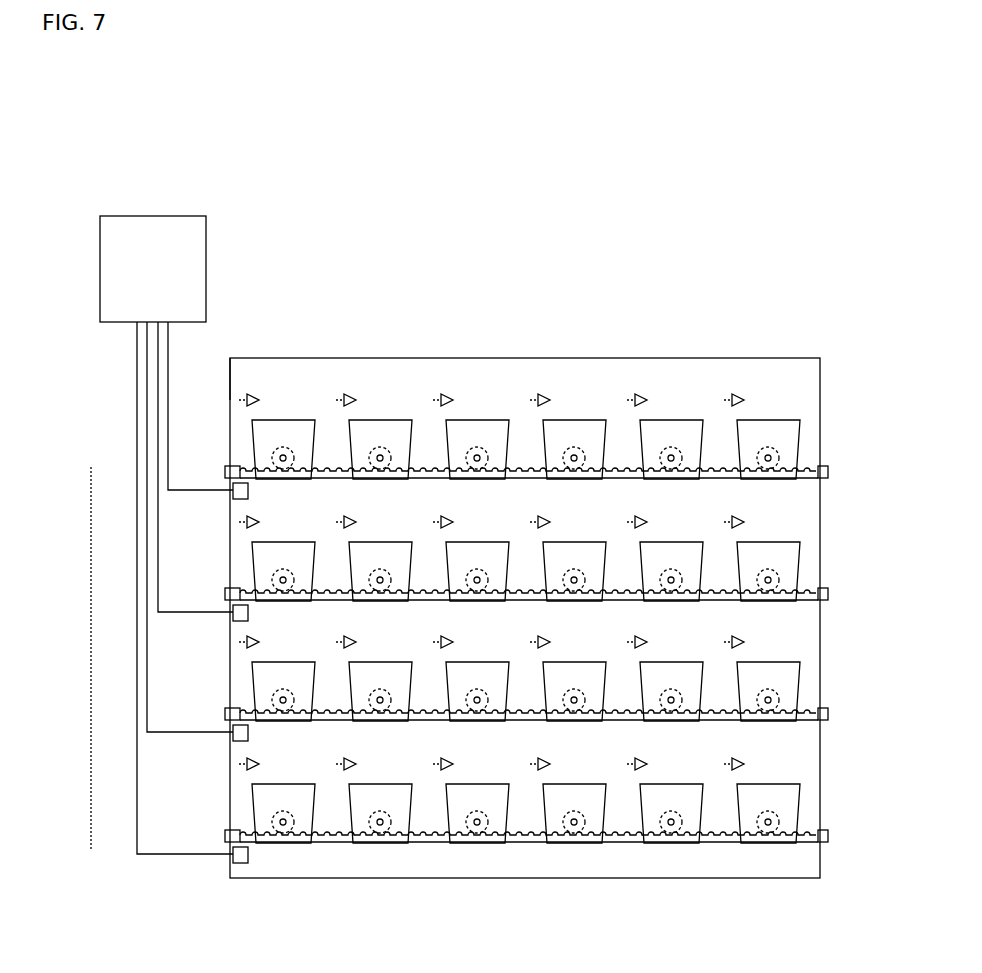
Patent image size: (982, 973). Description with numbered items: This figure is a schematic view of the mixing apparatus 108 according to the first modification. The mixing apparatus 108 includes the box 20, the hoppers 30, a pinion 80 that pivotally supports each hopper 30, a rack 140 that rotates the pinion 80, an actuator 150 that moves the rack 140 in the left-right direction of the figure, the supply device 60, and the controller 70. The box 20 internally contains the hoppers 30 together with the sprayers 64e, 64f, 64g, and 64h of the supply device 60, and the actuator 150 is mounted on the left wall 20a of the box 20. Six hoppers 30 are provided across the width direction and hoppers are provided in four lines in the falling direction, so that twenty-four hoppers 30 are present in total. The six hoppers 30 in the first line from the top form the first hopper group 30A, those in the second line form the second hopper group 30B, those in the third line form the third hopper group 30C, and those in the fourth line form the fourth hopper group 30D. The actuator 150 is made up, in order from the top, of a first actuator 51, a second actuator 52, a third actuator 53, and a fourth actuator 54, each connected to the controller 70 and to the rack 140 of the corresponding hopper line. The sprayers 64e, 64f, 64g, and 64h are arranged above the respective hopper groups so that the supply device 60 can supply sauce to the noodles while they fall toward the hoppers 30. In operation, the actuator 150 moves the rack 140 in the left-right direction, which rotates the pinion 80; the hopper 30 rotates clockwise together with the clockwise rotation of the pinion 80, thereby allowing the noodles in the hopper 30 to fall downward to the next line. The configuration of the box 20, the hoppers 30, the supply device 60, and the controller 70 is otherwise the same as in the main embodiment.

The mixing apparatus 108 is at (118, 177).
The controller 70 is at (103, 260).
The box 20 is at (781, 357).
The left wall 20a is at (228, 380).
The actuator 150 is at (91, 648).
The first actuator 51 is at (233, 488).
The second actuator 52 is at (233, 610).
The third actuator 53 is at (233, 730).
The fourth actuator 54 is at (233, 852).
The hopper 30 is at (390, 420).
The first hopper group 30A is at (552, 436).
The second hopper group 30B is at (806, 560).
The third hopper group 30C is at (806, 682).
The fourth hopper group 30D is at (806, 804).
The rack 140 is at (808, 468).
The pinion 80 is at (284, 446).
The supply device 60 is at (447, 394).
The sprayer 64e is at (462, 360).
The sprayer 64f is at (245, 522).
The sprayer 64g is at (245, 642).
The sprayer 64h is at (245, 764).